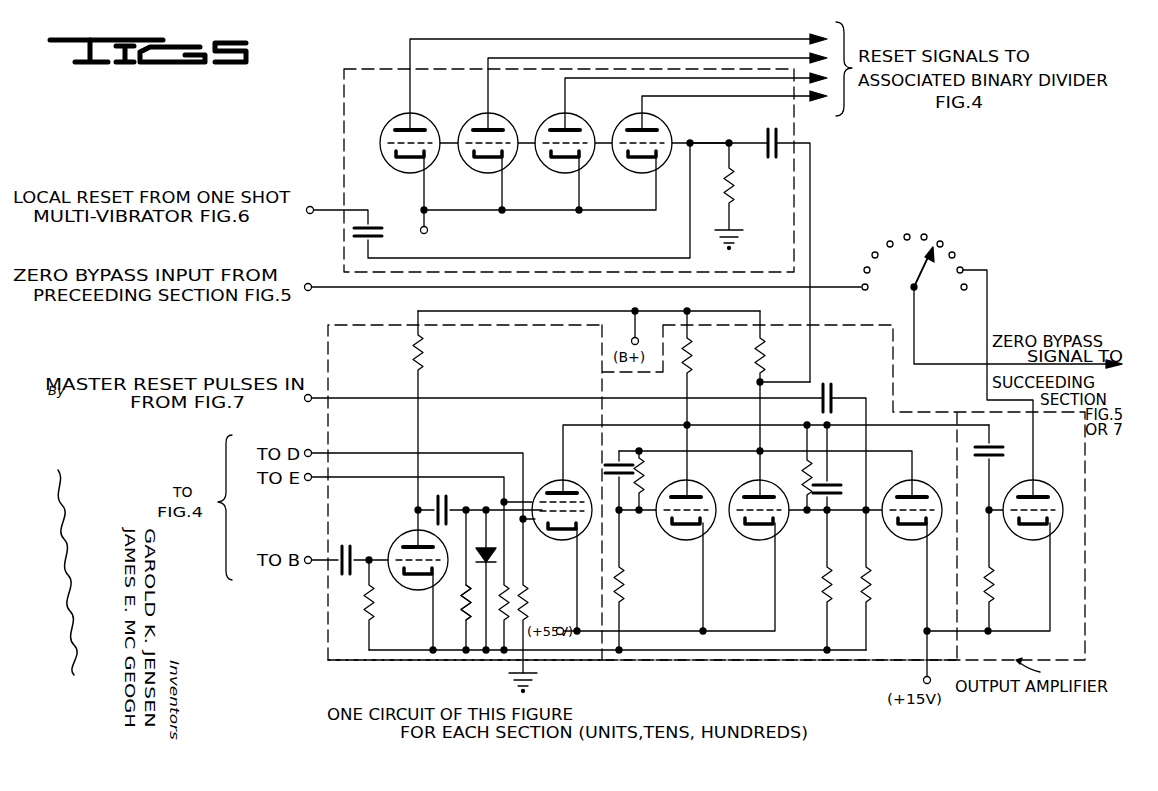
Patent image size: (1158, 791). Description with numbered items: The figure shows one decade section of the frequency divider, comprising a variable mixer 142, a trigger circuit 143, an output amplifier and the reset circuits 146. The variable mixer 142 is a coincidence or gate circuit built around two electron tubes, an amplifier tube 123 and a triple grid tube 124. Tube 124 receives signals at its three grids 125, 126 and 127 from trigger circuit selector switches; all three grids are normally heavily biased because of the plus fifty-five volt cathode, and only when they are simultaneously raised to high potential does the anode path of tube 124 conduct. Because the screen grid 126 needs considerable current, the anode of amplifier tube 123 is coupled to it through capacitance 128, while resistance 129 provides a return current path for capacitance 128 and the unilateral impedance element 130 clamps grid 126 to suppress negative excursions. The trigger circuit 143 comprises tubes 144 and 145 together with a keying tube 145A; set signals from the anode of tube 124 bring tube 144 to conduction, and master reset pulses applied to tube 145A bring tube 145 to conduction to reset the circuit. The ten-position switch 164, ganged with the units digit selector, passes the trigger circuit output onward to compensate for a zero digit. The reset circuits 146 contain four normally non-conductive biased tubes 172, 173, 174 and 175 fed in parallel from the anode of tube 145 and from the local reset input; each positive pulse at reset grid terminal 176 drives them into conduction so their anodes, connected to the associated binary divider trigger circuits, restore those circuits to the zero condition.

The amplifier tube 123 is at (399, 545).
The triple grid tube 124 is at (562, 548).
The grid 125 is at (542, 500).
The screen grid 126 is at (580, 495).
The grid 127 is at (540, 524).
The capacitance 128 is at (443, 504).
The resistance 129 is at (464, 612).
The unilateral impedance element 130 is at (482, 545).
The variable mixer 142 is at (432, 672).
The trigger circuit 143 is at (810, 663).
The trigger circuit tube 144 is at (670, 540).
The trigger circuit tube 145 is at (744, 540).
The keying tube 145A is at (894, 540).
The reset circuits 146 is at (567, 208).
The multiple position switch 164 is at (927, 276).
The reset tube 172 is at (400, 121).
The reset tube 173 is at (478, 121).
The reset tube 174 is at (555, 121).
The reset tube 175 is at (632, 121).
The reset grid terminal 176 is at (689, 144).